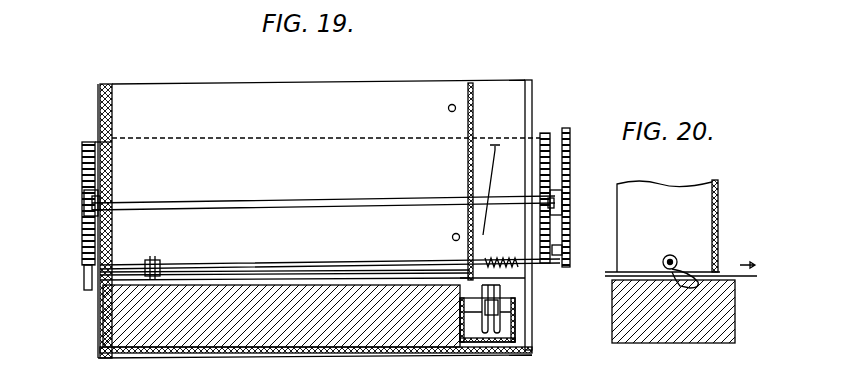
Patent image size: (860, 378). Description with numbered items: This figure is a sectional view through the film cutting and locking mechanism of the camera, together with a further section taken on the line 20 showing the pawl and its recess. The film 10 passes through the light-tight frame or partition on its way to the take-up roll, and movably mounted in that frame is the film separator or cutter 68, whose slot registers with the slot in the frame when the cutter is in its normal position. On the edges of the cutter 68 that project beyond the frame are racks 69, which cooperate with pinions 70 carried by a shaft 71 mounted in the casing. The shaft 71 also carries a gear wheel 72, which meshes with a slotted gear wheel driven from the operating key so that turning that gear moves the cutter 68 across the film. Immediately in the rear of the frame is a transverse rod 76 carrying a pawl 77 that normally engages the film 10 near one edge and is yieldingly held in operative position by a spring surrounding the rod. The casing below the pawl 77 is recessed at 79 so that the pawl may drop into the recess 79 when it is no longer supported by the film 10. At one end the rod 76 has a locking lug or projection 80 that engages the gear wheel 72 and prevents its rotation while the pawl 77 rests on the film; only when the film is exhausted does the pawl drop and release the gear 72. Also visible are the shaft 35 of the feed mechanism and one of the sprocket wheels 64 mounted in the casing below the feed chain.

In FIG. 19, the film 10 is at (250, 283).
In FIG. 20, the film 10 is at (730, 273).
In FIG. 19, the section line 20— 20 is at (155, 258).
In FIG. 19, the shaft 35 is at (525, 0).
In FIG. 19, the sprocket wheel 64 is at (500, 315).
In FIG. 19, the film separator or cutter 68 is at (82, 237).
In FIG. 19, the racks 69 is at (80, 156).
In FIG. 19, the pinions 70 is at (82, 198).
In FIG. 19, the shaft 71 is at (308, 200).
In FIG. 19, the gear wheel 72 is at (572, 136).
In FIG. 19, the transverse rod 76 is at (355, 262).
In FIG. 19, the pawl 77 is at (165, 270).
In FIG. 20, the pawl 77 is at (673, 256).
In FIG. 20, the recess 79 is at (700, 284).
In FIG. 19, the locking lug or projection 80 is at (565, 250).